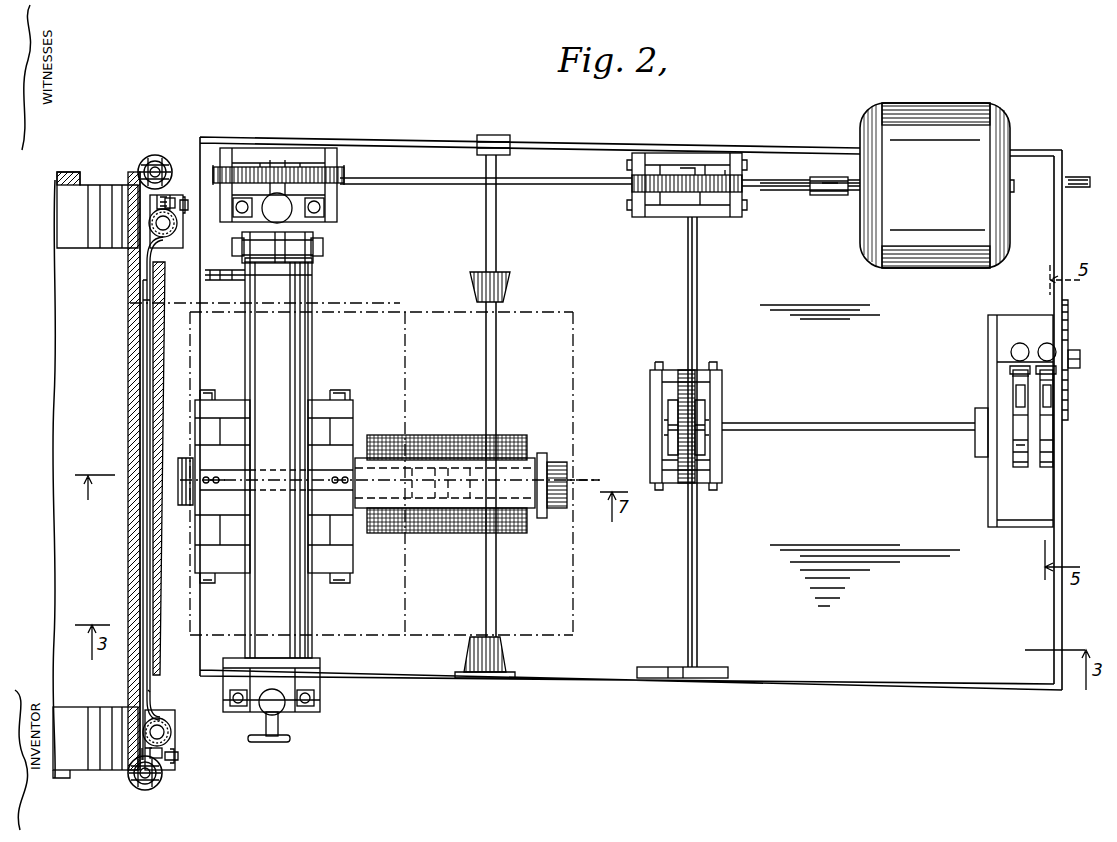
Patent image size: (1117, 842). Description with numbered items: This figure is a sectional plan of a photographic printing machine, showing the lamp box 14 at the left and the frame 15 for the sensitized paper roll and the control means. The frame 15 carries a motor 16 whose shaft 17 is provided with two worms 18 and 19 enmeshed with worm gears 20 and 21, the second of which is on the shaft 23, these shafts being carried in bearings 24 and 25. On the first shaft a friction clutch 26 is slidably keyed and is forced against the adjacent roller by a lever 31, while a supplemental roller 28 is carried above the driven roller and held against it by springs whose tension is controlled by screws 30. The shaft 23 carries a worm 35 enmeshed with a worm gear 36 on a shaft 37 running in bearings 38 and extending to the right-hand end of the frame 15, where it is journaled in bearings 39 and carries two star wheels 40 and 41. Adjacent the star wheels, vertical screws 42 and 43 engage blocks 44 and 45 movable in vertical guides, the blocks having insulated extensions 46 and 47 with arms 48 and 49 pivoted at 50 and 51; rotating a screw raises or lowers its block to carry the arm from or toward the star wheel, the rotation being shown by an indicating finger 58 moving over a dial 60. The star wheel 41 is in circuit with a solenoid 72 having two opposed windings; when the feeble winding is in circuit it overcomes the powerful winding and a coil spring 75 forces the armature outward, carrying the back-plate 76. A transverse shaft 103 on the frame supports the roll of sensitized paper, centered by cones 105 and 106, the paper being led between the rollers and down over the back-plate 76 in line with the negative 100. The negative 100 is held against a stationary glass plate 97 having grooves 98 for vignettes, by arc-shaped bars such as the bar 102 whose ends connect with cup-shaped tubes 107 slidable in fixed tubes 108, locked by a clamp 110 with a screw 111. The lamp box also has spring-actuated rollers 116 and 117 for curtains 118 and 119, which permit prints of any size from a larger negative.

The lamp box 14 is at (55, 272).
The frame 15 is at (422, 140).
The motor 16 is at (887, 185).
The shaft 17 is at (790, 195).
The worm 18 is at (300, 160).
The worm 19 is at (715, 165).
The worm gear 20 is at (342, 170).
The worm gear 21 is at (746, 178).
The shaft 23 is at (698, 250).
The bearing 24 is at (337, 196).
The bearing 25 is at (632, 202).
The clutch 26 is at (242, 247).
The supplemental roller 28 is at (262, 500).
The screw 30 is at (277, 208).
The lever 31 is at (323, 247).
The worm 35 is at (668, 405).
The worm gear 36 is at (696, 394).
The shaft 37 is at (766, 432).
The bearing 38 is at (714, 462).
The bearing 39 is at (975, 450).
The star wheel 40 is at (1046, 466).
The star wheel 41 is at (1021, 466).
The vertical screw 42 is at (1045, 350).
The vertical screw 43 is at (1018, 352).
The block 44 is at (320, 468).
The block 45 is at (1010, 368).
The extension 46 is at (1050, 382).
The extension 47 is at (1036, 372).
The arm 48 is at (1050, 416).
The arm 49 is at (1013, 418).
The pivot 50 is at (1051, 398).
The pivot 51 is at (1016, 396).
The indicating finger 58 is at (1076, 350).
The dial 60 is at (1068, 312).
The solenoid 72 is at (448, 436).
The coil spring 75 is at (182, 505).
The back-plate 76 is at (160, 390).
The glass plate 97 is at (128, 347).
The groove 98 is at (112, 182).
The negative 100 is at (140, 378).
The bar 102 is at (151, 262).
The transverse shaft 103 is at (497, 356).
The cone 105 is at (505, 288).
The cone 106 is at (504, 656).
The cup-shaped tube 107 is at (166, 222).
The fixed tube 108 is at (170, 209).
The clamp 110 is at (181, 196).
The screw 111 is at (186, 199).
The spring actuated roller 116 is at (158, 156).
The spring actuated roller 117 is at (160, 778).
The curtain 118 is at (143, 284).
The curtain 119 is at (128, 689).